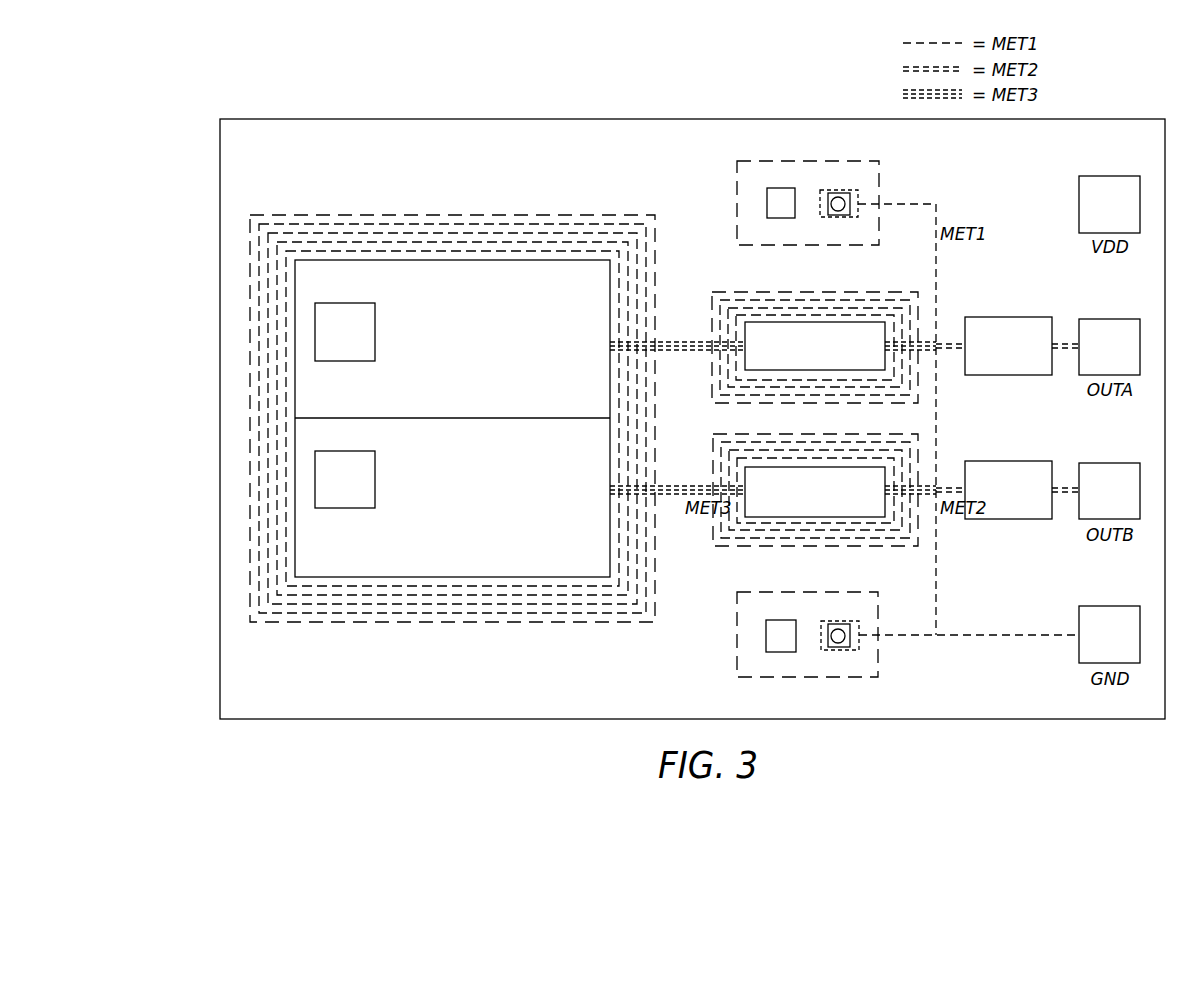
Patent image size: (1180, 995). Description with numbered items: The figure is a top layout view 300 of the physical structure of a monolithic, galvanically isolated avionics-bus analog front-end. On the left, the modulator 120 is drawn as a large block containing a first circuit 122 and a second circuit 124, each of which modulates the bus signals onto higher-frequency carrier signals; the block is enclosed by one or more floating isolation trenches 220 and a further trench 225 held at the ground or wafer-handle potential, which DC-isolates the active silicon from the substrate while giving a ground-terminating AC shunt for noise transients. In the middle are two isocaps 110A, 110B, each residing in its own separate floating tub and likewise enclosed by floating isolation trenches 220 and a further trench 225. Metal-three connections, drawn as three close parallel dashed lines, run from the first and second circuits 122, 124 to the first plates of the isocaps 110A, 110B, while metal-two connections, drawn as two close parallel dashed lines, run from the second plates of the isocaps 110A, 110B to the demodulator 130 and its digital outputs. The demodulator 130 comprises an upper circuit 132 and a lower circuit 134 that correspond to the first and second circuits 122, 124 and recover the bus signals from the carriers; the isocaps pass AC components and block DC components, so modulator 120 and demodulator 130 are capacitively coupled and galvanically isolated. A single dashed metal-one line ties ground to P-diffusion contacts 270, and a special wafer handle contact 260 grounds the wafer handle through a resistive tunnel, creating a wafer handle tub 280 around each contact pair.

The top layout view 300 is at (190, 216).
The modulator 120 is at (452, 355).
The first circuit 122 is at (452, 354).
The second circuit 124 is at (403, 487).
The floating isolation trenches 220 is at (323, 238).
The further trench 225 is at (403, 214).
The isocap 110A is at (862, 322).
The isocap 110B is at (852, 517).
The demodulator 130 is at (1008, 425).
The upper circuit 132 is at (1006, 317).
The lower circuit 134 is at (1006, 461).
The wafer handle contact 260 is at (767, 203).
The P-diffusion contacts 270 is at (830, 188).
The wafer handle tub 280 is at (879, 168).